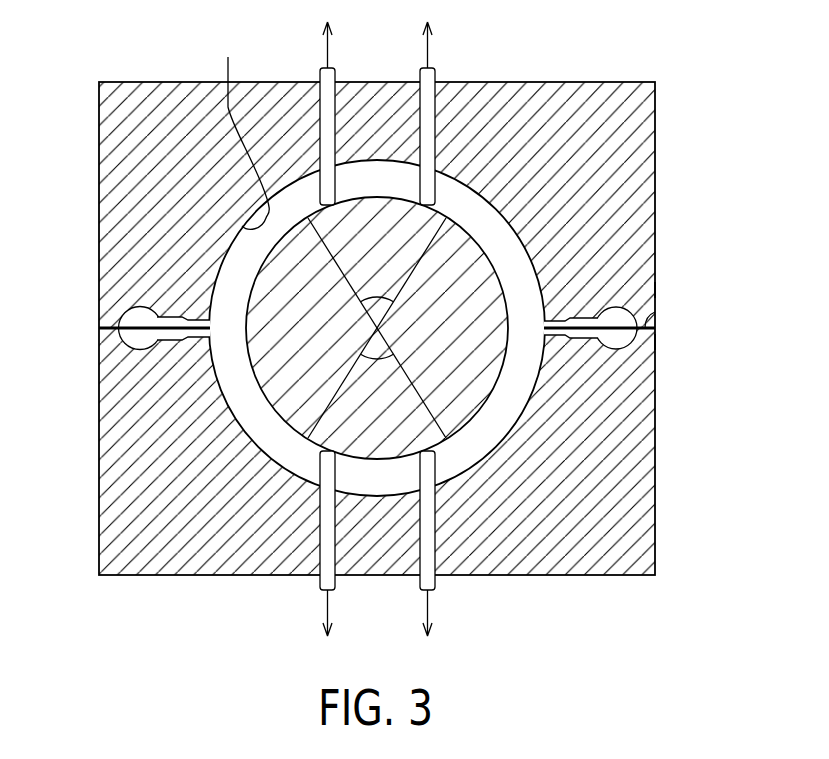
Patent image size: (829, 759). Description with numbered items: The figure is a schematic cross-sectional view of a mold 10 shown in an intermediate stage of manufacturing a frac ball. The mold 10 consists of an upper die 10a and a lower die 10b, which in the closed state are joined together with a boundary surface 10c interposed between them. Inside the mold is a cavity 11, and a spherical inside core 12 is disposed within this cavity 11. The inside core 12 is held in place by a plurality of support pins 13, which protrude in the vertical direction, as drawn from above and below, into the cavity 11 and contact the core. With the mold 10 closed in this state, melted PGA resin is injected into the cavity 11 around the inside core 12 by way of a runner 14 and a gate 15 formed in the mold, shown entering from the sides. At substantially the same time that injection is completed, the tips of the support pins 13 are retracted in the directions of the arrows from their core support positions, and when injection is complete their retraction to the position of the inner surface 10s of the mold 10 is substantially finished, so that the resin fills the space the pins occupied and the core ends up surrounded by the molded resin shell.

The mold 10 is at (740, 268).
The upper die 10a is at (655, 290).
The lower die 10b is at (655, 342).
The boundary surface 10c is at (653, 312).
The inner surface of the mold 10s is at (377, 181).
The cavity 11 is at (236, 403).
The spherical inside core 12 is at (487, 372).
The support pins 13 is at (320, 64).
The runner 14 is at (136, 322).
The gate 15 is at (192, 338).